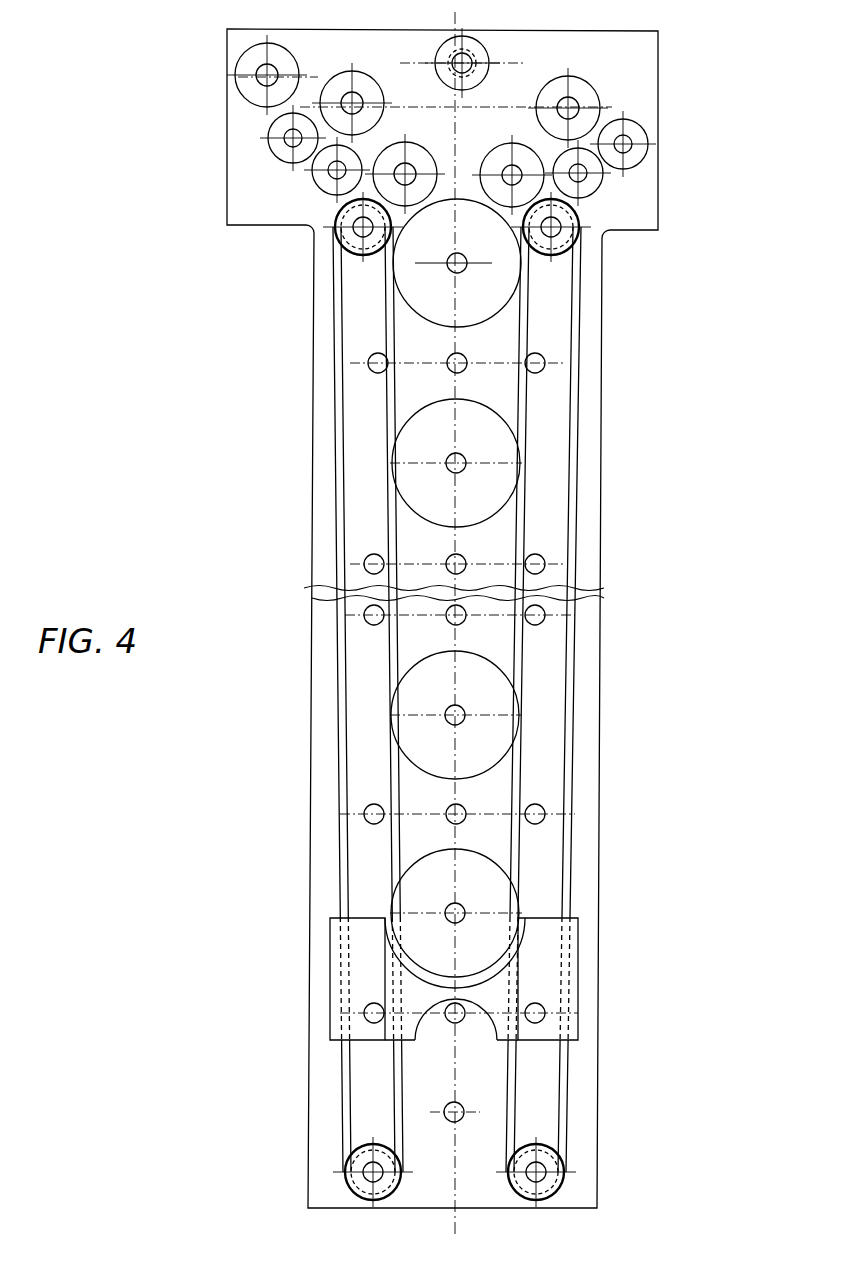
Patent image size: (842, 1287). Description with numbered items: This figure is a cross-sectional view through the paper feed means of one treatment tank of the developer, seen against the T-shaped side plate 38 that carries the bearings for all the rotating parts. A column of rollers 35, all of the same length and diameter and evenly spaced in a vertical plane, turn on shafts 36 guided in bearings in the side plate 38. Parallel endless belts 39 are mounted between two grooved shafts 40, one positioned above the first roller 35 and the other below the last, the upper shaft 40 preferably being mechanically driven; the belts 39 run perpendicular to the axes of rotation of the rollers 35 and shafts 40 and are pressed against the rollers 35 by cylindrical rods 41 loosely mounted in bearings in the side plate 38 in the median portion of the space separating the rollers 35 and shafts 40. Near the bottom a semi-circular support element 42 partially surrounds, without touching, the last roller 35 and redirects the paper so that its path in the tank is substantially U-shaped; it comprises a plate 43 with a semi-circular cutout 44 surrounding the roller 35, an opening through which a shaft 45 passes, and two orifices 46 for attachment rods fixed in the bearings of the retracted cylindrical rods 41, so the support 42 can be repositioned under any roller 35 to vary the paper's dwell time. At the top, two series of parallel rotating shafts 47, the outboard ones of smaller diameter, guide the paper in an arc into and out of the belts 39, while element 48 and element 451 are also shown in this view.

The roller 35 is at (500, 282).
The shaft 36 is at (400, 465).
The side plate 38 is at (312, 537).
The endless belt 39 is at (577, 410).
The shaft 40 is at (345, 245).
The cylindrical rod 41 is at (368, 364).
The semi-circular support element 42 is at (335, 917).
The plate 43 is at (338, 975).
The semi-circular cutout 44 is at (530, 973).
The shaft 45 is at (448, 371).
The bracket arch recess 451 is at (490, 1018).
The orifice 46 is at (545, 1007).
The rotating shaft 47 is at (321, 100).
The drive shaft 48 is at (477, 73).